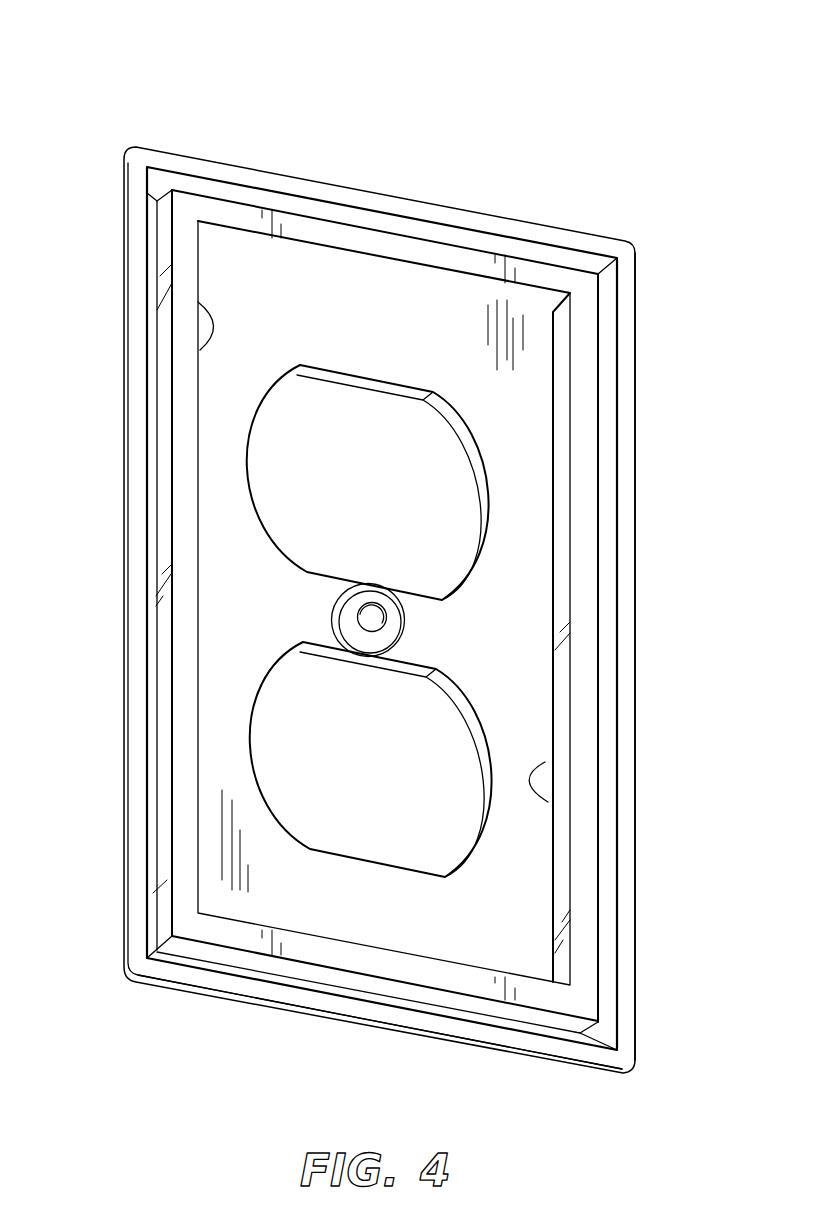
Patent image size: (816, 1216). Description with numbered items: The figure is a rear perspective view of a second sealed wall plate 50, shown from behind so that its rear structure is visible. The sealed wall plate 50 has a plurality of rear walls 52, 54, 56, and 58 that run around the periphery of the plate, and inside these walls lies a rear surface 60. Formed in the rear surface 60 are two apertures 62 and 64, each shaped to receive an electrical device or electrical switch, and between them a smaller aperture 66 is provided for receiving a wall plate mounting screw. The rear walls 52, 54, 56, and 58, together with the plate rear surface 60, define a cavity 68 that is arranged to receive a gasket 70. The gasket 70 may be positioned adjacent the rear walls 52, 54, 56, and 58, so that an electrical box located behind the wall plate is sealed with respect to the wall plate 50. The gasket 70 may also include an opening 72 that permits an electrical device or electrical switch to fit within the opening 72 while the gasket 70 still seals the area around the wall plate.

The sealed wall plate 50 is at (552, 103).
The rear wall 52 is at (139, 219).
The rear wall 54 is at (463, 221).
The rear wall 56 is at (623, 370).
The rear wall 58 is at (270, 998).
The rear surface 60 is at (275, 296).
The aperture 62 is at (312, 450).
The aperture 64 is at (310, 744).
The aperture 66 is at (358, 613).
The cavity 68 is at (156, 508).
The gasket 70 is at (370, 230).
The opening 72 is at (198, 302).